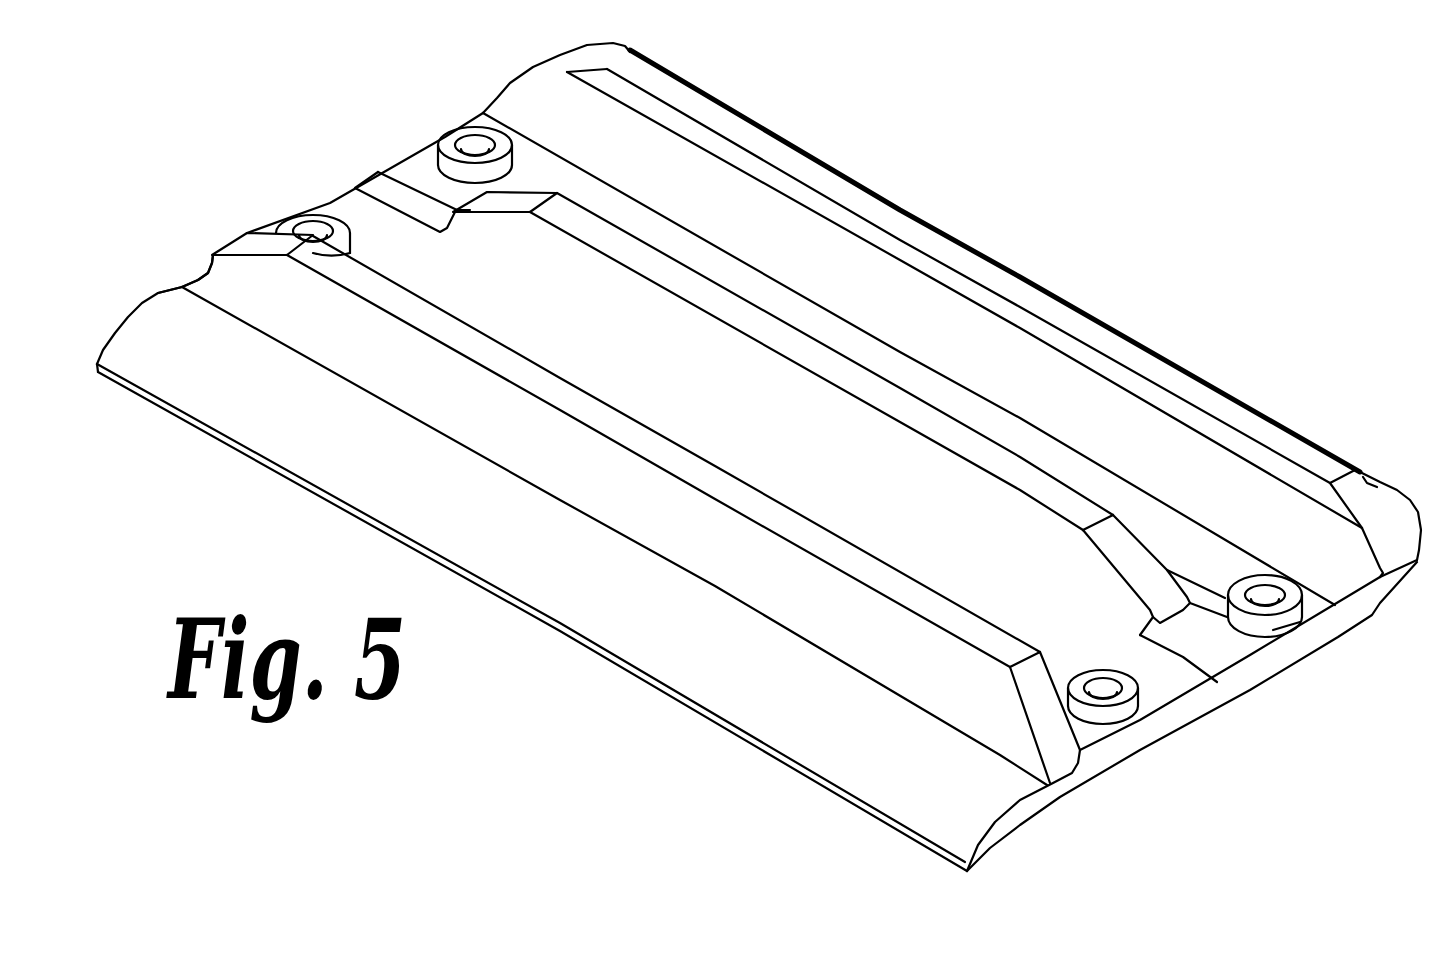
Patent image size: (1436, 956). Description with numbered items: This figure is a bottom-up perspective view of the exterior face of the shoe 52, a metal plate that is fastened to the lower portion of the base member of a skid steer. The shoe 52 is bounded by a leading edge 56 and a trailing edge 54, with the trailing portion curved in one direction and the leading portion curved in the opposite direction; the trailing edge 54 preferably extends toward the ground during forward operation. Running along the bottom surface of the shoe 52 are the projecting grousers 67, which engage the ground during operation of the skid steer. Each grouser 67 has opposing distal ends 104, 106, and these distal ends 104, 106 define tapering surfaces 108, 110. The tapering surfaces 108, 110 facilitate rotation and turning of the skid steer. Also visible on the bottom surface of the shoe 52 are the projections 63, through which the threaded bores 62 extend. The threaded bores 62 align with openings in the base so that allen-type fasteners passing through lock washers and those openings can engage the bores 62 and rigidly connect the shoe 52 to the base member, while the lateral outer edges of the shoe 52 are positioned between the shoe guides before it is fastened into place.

The shoe 52 is at (995, 261).
The trailing edge 54 is at (984, 298).
The leading edge 56 is at (759, 457).
The threaded bores 62 is at (912, 391).
The projections 63 is at (803, 401).
The grousers 67 is at (700, 430).
The distal end 104 is at (314, 200).
The distal end 106 is at (1196, 716).
The tapering surface 108 is at (382, 293).
The tapering surface 110 is at (1044, 652).